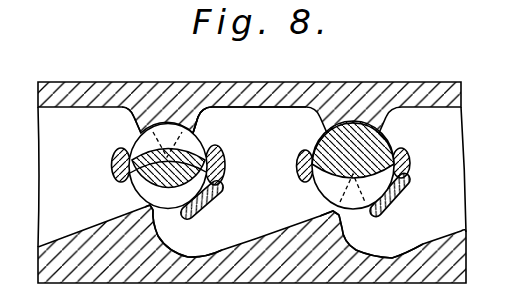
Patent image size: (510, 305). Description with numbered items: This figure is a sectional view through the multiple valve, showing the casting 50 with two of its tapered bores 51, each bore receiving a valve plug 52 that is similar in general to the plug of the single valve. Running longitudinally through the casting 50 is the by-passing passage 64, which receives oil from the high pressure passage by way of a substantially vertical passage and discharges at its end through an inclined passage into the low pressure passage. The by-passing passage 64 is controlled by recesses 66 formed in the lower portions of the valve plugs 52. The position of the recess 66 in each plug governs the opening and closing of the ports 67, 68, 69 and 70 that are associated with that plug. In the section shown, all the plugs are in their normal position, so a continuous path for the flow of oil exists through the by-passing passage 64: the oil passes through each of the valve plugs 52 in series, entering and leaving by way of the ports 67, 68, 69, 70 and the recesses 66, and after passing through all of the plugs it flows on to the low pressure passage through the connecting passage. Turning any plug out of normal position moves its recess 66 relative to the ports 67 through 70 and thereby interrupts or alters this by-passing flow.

The casting 50 is at (85, 82).
The tapered bore 51 is at (218, 180).
The valve plug 52 is at (124, 164).
The by-passing passage 64 is at (252, 106).
The recess 66 is at (304, 165).
The port 67 is at (144, 127).
The port 68 is at (196, 126).
The port 69 is at (169, 215).
The port 70 is at (130, 184).